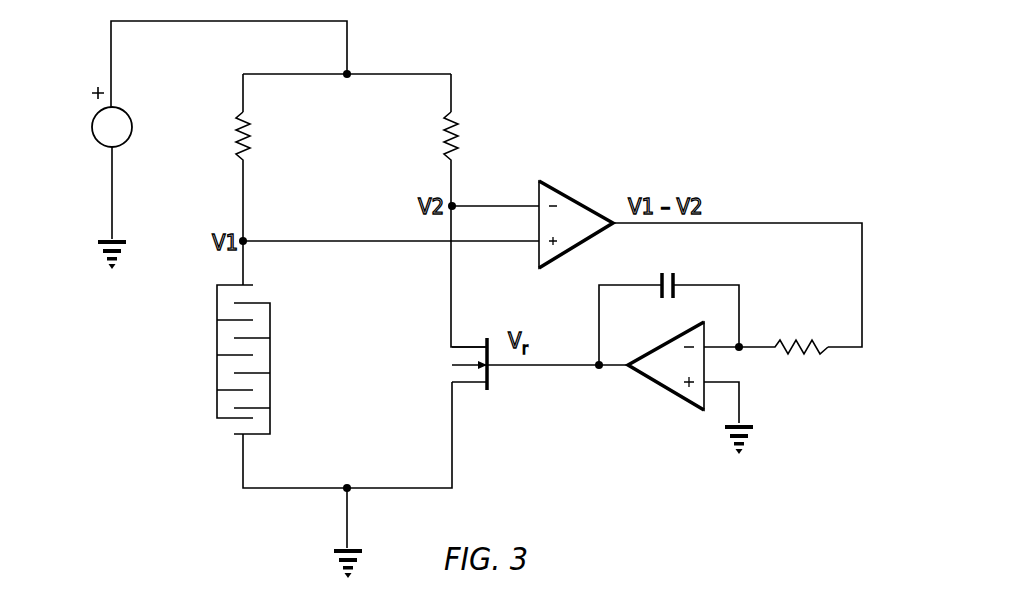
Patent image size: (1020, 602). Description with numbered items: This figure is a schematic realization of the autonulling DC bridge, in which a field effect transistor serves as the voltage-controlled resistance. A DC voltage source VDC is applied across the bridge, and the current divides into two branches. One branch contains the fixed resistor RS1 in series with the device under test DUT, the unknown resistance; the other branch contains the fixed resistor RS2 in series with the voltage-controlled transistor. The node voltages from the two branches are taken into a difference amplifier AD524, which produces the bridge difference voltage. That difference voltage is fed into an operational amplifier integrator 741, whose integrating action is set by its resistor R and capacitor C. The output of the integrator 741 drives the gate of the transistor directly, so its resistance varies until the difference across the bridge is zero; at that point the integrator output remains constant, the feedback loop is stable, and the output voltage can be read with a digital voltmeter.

The DC voltage source VDC is at (89, 178).
The sense resistor RS1 is at (238, 134).
The sense resistor RS2 is at (458, 138).
The difference amplifier AD524 is at (560, 191).
The device under test DUT is at (221, 359).
The operational amplifier integrator 741 is at (666, 371).
The integrator capacitor C is at (677, 279).
The integrator resistor R is at (798, 340).